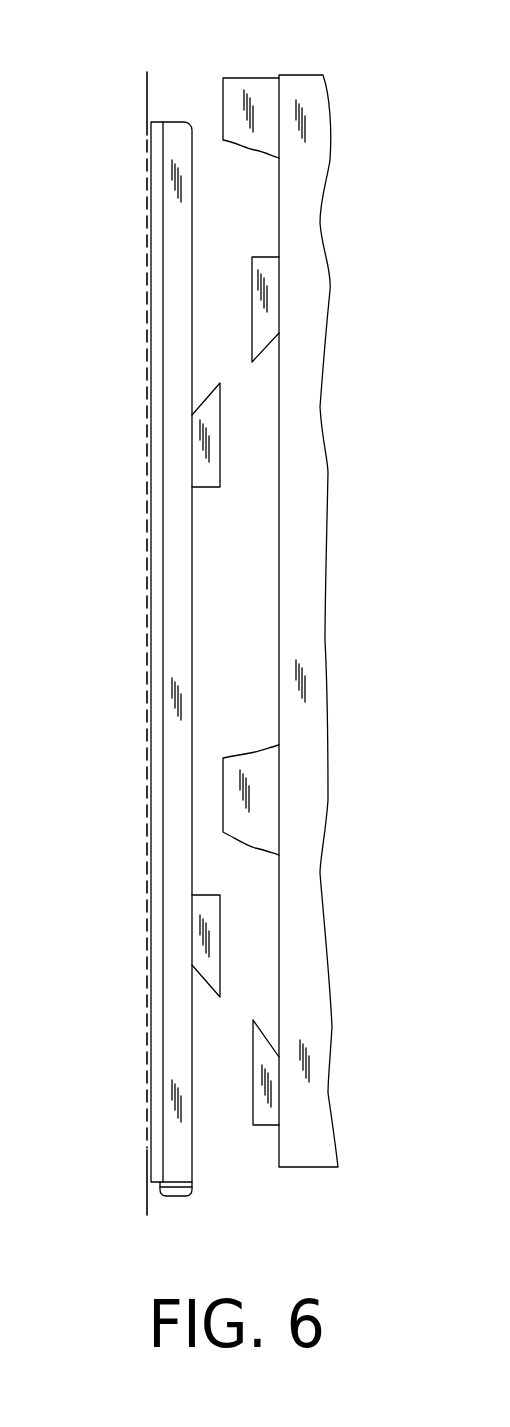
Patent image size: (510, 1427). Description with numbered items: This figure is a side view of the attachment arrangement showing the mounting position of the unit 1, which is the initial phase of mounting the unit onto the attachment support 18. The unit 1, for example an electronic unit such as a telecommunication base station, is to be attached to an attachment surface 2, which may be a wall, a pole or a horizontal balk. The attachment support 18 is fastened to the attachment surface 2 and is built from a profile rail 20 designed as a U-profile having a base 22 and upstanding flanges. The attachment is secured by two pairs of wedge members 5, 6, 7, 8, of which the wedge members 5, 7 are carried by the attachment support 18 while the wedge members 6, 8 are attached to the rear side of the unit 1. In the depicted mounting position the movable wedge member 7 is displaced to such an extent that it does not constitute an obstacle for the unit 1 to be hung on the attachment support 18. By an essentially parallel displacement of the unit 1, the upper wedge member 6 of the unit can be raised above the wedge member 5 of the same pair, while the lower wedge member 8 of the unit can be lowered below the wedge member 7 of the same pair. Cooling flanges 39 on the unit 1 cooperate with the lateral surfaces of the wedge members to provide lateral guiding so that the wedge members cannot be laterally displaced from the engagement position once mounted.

The unit 1 is at (308, 1167).
The attachment surface 2 is at (148, 103).
The wedge member 5 is at (210, 403).
The wedge member 6 is at (252, 334).
The wedge member 7 is at (205, 980).
The wedge member 8 is at (257, 1040).
The attachment support 18 is at (147, 708).
The profile rail 20 is at (151, 310).
The base 22 is at (170, 135).
The cooling flange 39 is at (258, 85).